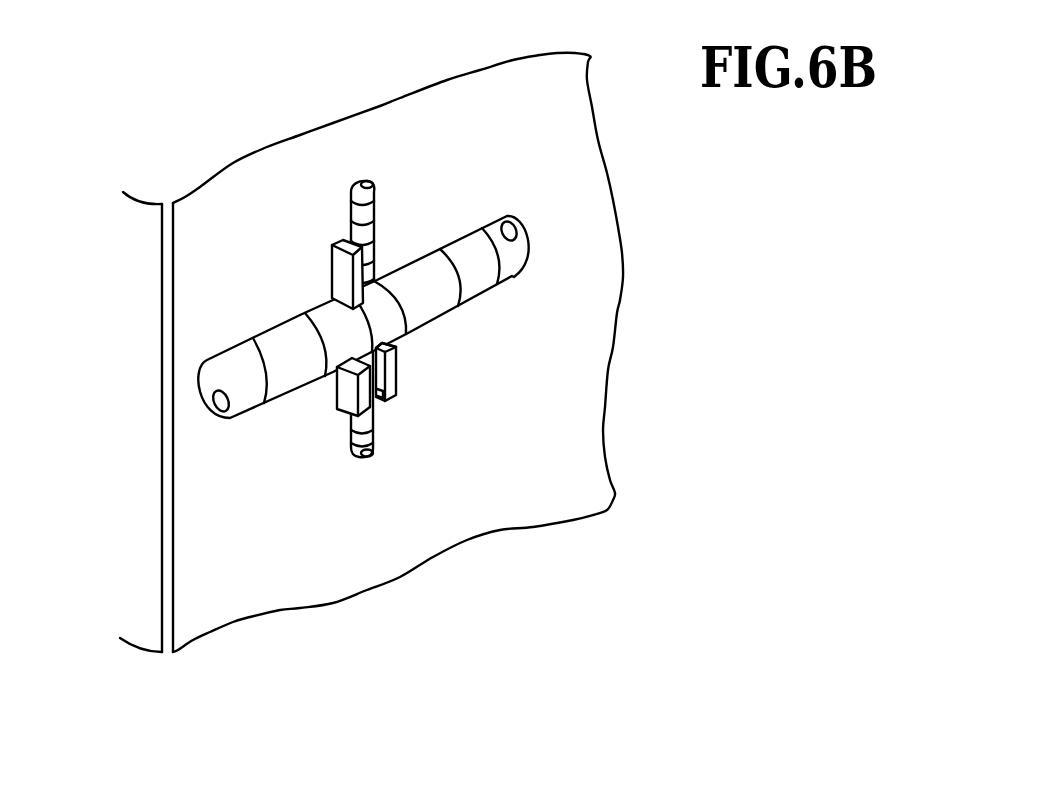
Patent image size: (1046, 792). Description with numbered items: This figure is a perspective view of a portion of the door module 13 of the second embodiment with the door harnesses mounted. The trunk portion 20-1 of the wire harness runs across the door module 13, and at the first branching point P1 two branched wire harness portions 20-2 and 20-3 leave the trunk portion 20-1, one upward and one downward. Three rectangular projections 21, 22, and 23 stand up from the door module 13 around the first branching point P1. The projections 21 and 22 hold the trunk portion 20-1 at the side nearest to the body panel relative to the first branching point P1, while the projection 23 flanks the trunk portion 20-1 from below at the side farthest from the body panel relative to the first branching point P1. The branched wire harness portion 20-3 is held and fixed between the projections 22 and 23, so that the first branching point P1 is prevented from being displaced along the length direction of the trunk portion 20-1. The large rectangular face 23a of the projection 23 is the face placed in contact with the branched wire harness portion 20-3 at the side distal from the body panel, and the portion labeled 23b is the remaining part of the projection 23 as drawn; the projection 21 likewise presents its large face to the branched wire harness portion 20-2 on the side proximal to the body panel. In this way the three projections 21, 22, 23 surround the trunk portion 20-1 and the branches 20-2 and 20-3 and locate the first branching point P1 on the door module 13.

The door module 13 is at (188, 533).
The trunk portion of the wire harness 20-1 is at (475, 246).
The branched wire harness portion 20-2 is at (376, 204).
The branched wire harness portion 20-3 is at (351, 440).
The rectangular projection 21 is at (340, 273).
The rectangular projection 22 is at (347, 387).
The rectangular projection 23 is at (398, 367).
The large rectangular face of projection 23 23a is at (380, 400).
The clip upper portion 23b is at (395, 343).
The first branching point P1 is at (372, 318).